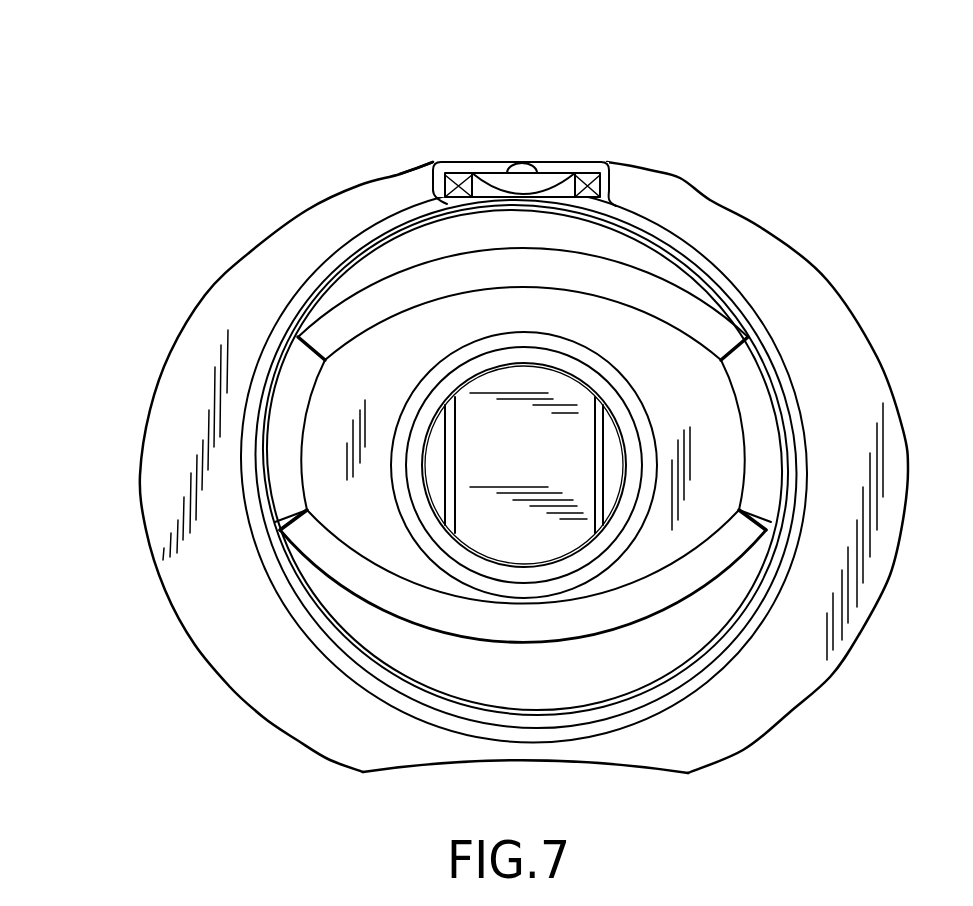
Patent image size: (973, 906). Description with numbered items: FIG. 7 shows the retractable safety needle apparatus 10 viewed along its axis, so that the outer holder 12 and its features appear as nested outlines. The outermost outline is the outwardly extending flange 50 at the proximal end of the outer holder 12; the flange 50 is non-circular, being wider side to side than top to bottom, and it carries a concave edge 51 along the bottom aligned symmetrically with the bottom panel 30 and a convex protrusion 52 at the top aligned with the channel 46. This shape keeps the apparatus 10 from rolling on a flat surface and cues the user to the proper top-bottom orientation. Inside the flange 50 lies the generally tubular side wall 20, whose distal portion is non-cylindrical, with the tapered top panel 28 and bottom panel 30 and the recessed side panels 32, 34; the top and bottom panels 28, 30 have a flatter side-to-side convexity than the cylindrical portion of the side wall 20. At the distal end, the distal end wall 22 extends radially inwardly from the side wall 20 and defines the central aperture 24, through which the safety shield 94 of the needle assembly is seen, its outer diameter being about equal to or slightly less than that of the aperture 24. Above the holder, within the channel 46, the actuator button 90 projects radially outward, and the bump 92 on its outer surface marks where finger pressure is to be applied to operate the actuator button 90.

The retractable safety needle apparatus 10 is at (776, 126).
The outer holder 12 is at (702, 165).
The side wall 20 is at (246, 540).
The distal end wall 22 is at (688, 420).
The central aperture 24 is at (617, 460).
The top panel 28 is at (385, 303).
The bottom panel 30 is at (400, 592).
The side panel 32 is at (287, 427).
The side panel 34 is at (766, 436).
The channel 46 is at (458, 162).
The flange 50 is at (847, 288).
The concave edge 51 is at (405, 772).
The convex protrusion 52 is at (527, 127).
The actuator button 90 is at (536, 182).
The bump 92 is at (519, 161).
The safety shield 94 is at (498, 469).